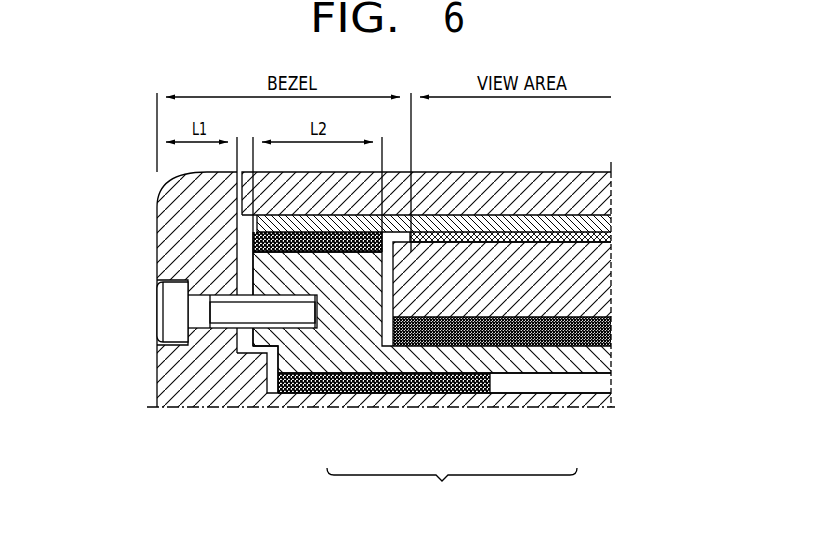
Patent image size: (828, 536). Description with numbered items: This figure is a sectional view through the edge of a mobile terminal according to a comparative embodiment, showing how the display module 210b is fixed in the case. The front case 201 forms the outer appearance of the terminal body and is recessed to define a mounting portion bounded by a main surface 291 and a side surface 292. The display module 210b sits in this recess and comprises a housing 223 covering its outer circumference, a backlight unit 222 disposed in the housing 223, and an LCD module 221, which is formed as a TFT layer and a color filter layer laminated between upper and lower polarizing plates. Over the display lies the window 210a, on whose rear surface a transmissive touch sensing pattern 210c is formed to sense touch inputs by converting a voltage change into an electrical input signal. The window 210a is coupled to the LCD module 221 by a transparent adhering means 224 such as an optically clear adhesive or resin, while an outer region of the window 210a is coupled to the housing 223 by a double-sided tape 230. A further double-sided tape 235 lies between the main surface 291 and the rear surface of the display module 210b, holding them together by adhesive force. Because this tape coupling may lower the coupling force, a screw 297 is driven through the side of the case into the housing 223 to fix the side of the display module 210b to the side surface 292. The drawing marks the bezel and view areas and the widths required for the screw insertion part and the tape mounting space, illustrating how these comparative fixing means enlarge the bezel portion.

The front case 201 is at (157, 378).
The window 210a is at (605, 191).
The display module 210b is at (452, 488).
The touch sensing pattern 210c is at (605, 218).
The LCD module 221 is at (457, 298).
The backlight unit 222 is at (556, 334).
The housing 223 is at (348, 360).
The transparent adhering means 224 is at (605, 236).
The double-sided tape 230 is at (257, 247).
The double-sided tape 235 is at (297, 387).
The main surface 291 is at (580, 392).
The side surface 292 is at (240, 282).
The screw 297 is at (157, 312).